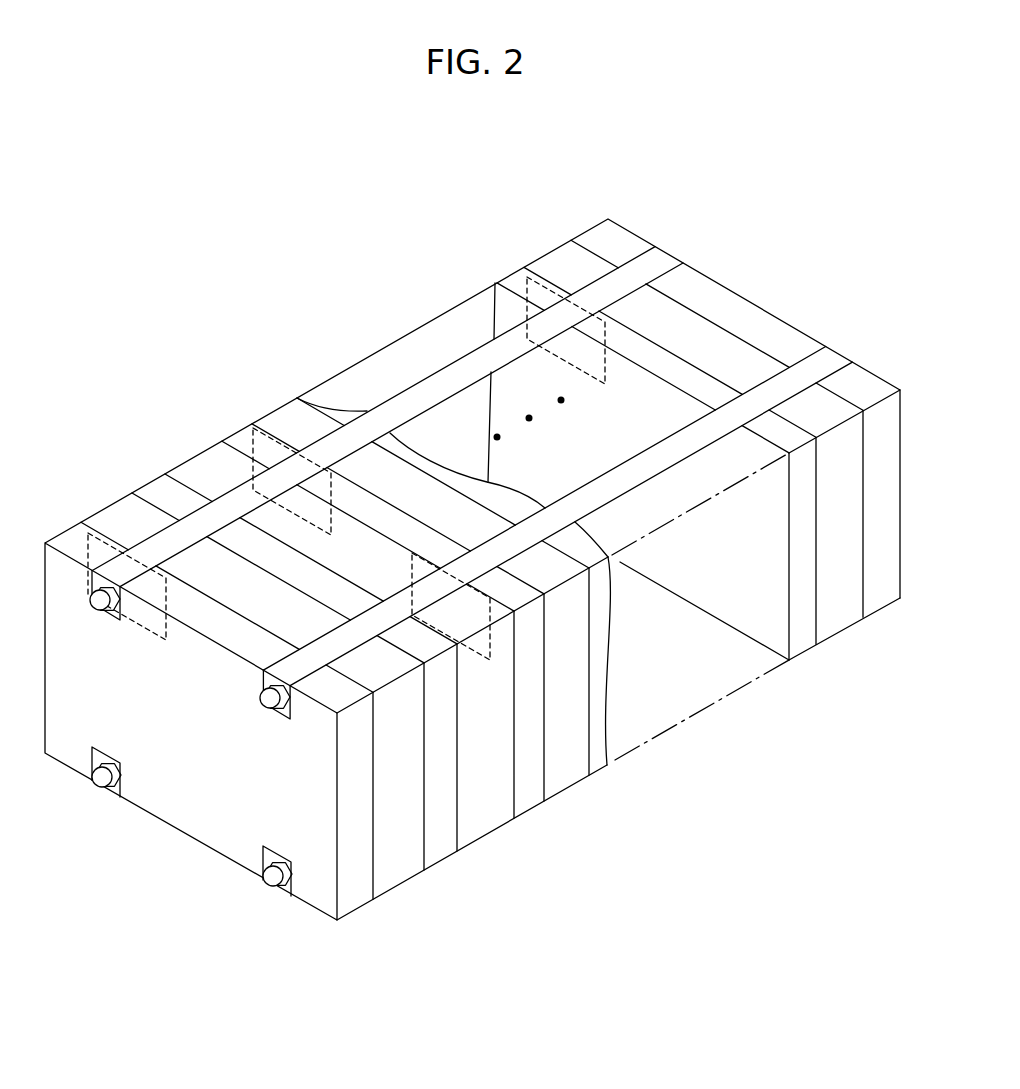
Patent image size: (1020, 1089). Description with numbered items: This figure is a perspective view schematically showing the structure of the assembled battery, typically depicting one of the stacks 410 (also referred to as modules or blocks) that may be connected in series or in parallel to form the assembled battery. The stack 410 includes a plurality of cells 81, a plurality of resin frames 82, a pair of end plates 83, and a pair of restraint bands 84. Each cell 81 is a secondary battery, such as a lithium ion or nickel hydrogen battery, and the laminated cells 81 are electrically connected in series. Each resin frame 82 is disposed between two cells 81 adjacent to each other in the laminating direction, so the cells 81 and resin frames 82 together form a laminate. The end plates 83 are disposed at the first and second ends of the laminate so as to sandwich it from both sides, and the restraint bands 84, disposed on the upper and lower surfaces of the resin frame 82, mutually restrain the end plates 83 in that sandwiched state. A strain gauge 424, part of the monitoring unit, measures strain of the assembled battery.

The stack 410 is at (238, 311).
The cell 81 is at (395, 872).
The resin frame 82 is at (432, 847).
The end plate 83 is at (355, 882).
The restraint band 84 is at (430, 392).
The strain gauge 424 is at (547, 297).